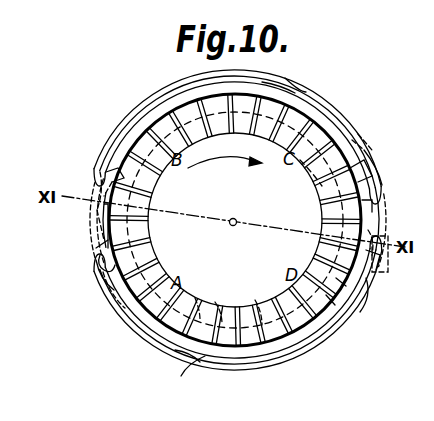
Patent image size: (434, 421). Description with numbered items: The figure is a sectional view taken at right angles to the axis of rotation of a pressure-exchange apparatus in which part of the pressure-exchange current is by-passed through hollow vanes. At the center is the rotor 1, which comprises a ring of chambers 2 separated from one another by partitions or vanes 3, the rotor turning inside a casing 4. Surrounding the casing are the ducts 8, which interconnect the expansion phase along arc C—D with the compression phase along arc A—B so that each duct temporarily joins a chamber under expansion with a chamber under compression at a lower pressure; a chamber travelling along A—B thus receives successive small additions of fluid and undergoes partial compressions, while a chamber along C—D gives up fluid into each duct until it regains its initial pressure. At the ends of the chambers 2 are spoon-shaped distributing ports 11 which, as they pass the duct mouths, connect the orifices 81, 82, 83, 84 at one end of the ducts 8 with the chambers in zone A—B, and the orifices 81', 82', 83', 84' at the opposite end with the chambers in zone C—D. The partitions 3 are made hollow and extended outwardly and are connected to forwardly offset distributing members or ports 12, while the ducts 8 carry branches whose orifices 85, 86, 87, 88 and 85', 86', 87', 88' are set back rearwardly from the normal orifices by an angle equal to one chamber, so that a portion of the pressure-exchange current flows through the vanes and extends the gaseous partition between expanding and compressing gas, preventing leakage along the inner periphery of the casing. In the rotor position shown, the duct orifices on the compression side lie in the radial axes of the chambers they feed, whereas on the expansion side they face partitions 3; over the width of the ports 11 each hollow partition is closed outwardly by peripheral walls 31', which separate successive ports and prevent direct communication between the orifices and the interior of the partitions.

The rotor 1 is at (150, 266).
The chambers 2 is at (320, 200).
The partitions or vanes 3 is at (158, 164).
The casing 4 is at (248, 352).
The ducts 8 is at (300, 88).
The distributing ports 11 is at (262, 324).
The distributing members or ports 12 is at (222, 322).
The peripheral walls 31' is at (356, 318).
The orifice 81 is at (97, 146).
The orifice 82 is at (75, 226).
The orifice 83 is at (70, 255).
The orifice 84 is at (88, 290).
The branch orifice 85 is at (85, 175).
The branch orifice 86 is at (79, 228).
The branch orifice 87 is at (84, 271).
The branch orifice 88 is at (104, 308).
The orifice 81' is at (392, 167).
The orifice 82' is at (398, 195).
The orifice 83' is at (398, 269).
The orifice 84' is at (384, 304).
The branch orifice 85' is at (373, 123).
The branch orifice 86' is at (393, 158).
The branch orifice 87' is at (399, 230).
The branch orifice 88' is at (395, 272).